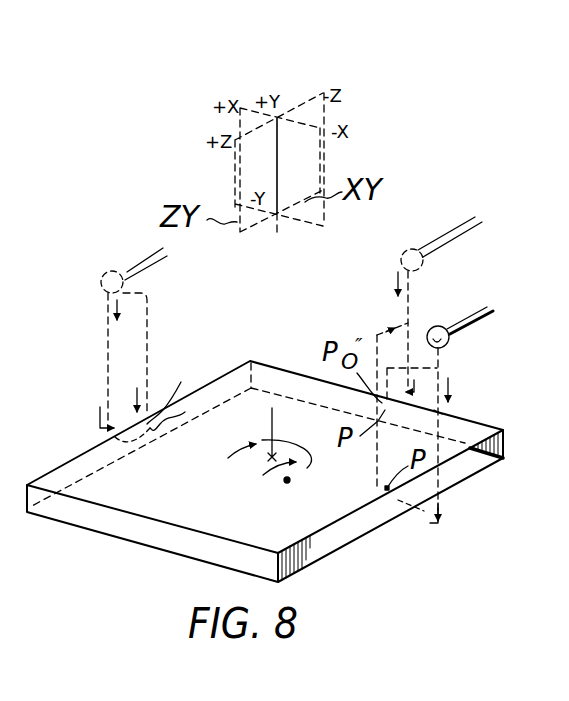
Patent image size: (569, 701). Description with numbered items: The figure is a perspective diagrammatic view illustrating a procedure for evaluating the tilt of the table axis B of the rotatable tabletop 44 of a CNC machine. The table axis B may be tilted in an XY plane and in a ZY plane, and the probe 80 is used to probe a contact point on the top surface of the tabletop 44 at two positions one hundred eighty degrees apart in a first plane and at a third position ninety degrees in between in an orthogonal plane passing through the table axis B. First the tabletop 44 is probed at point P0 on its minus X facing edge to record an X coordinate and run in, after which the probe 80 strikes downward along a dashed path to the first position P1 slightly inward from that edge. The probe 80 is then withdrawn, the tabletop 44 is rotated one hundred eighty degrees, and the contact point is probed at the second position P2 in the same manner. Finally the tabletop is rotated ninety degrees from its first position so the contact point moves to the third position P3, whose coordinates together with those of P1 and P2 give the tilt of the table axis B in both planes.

The rotatable tabletop 44 is at (141, 530).
The probe 80 is at (470, 325).
The point P0 is at (402, 498).
The first position P1 is at (387, 488).
The second position P2 is at (117, 436).
The third position P3 is at (432, 416).
The table axis B is at (272, 420).